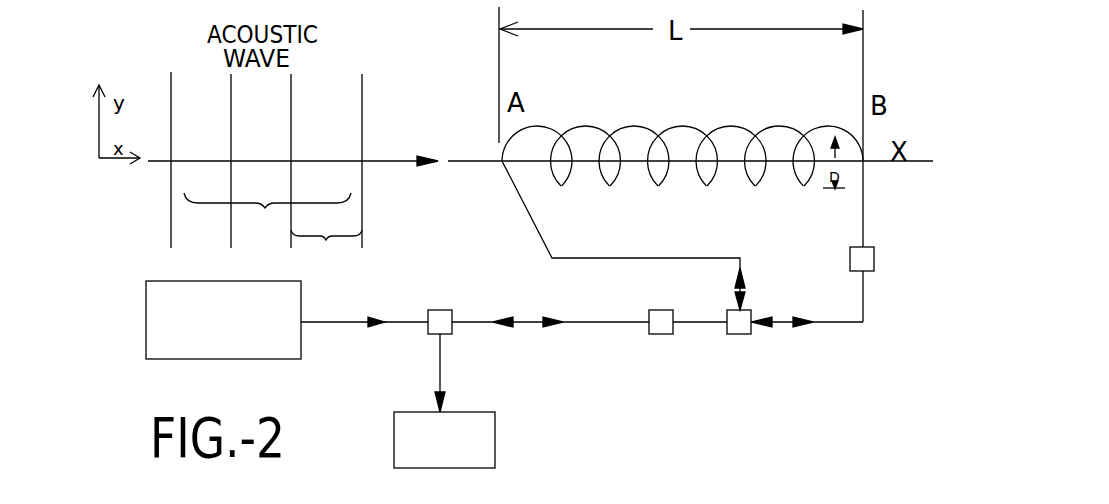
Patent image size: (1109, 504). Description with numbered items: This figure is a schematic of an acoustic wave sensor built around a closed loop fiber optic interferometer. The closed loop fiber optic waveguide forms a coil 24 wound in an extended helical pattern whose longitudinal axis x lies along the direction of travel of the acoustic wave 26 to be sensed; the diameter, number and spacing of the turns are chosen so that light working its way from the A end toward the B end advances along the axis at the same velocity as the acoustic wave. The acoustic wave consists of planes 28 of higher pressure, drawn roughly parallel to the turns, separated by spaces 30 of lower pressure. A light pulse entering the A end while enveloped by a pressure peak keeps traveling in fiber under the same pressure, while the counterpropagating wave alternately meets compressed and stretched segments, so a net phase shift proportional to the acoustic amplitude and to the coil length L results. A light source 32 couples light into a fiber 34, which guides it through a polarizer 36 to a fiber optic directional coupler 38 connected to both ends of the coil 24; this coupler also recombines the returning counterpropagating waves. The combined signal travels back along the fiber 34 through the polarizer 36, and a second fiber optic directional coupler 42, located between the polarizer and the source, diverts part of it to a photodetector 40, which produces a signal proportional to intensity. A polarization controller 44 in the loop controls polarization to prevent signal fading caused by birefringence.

The coil 24 is at (689, 86).
The acoustic wave 26 is at (395, 100).
The planes of the acoustic wave 28 is at (326, 250).
The spaces 30 is at (267, 217).
The light source 32 is at (236, 281).
The fiber 34 is at (318, 322).
The polarizer 36 is at (661, 283).
The fiber optic directional coupler 38 is at (745, 334).
The photodetector 40 is at (495, 418).
The second fiber optic directional coupler 42 is at (450, 334).
The polarization controller 44 is at (874, 257).